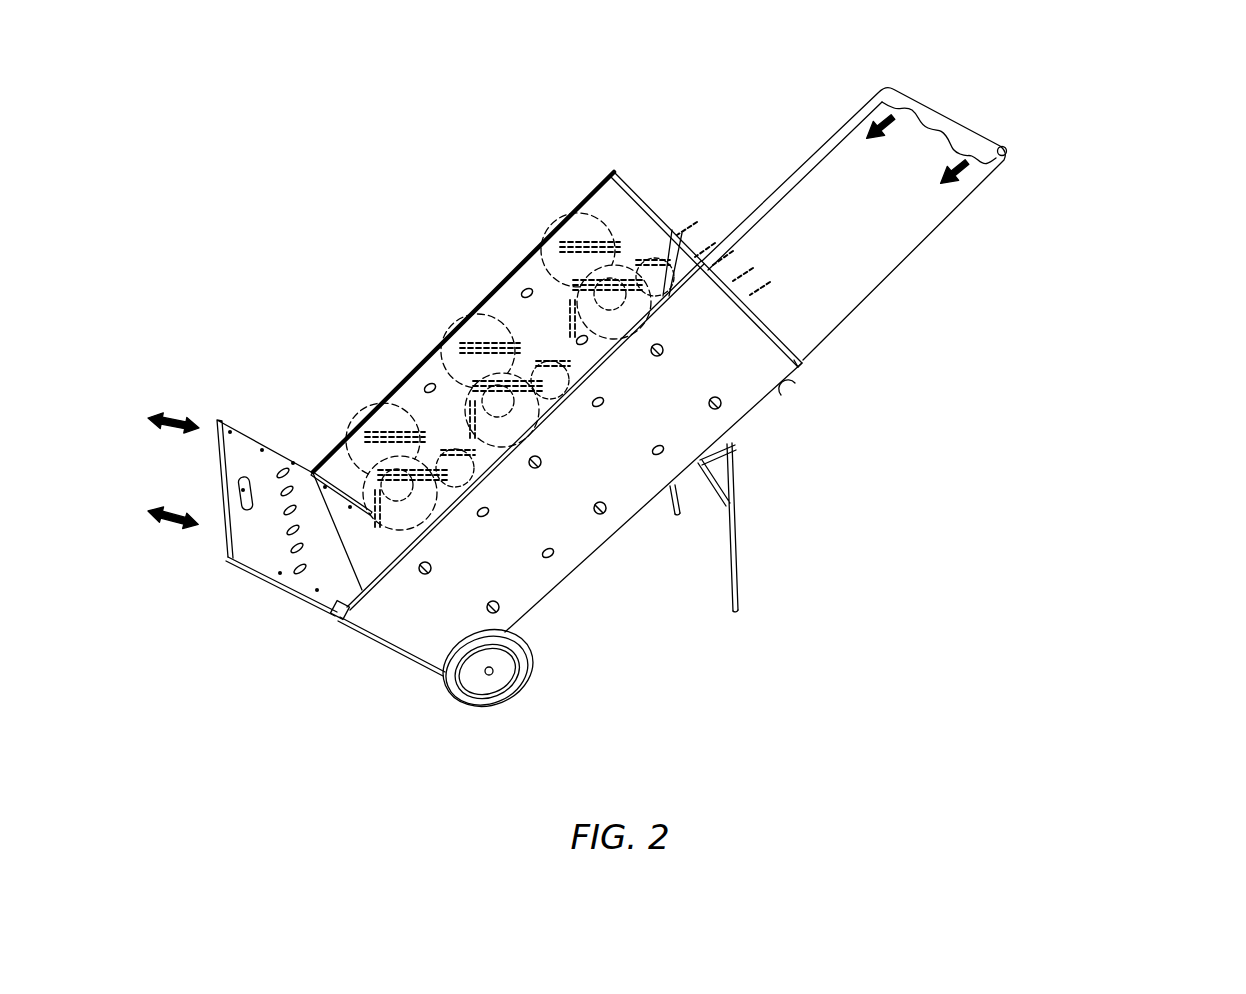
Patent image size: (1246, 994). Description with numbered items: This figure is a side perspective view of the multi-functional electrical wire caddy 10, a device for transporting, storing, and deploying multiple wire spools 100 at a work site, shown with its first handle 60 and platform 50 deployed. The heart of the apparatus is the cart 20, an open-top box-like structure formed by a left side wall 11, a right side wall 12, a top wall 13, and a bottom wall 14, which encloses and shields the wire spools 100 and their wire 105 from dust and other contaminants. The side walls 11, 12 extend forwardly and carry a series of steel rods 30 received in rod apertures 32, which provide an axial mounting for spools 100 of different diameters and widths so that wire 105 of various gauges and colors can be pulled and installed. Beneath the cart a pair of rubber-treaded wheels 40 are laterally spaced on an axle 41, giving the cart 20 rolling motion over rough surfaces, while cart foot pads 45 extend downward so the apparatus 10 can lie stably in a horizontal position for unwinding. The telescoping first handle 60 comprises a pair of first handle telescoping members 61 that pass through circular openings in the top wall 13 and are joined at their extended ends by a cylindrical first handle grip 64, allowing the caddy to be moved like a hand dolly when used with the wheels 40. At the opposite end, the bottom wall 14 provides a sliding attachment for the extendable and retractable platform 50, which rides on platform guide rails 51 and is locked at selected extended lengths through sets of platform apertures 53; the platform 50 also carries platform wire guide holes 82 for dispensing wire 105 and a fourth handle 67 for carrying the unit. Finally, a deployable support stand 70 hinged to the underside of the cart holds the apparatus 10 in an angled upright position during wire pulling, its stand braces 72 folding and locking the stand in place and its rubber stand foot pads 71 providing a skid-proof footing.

The multi-functional electrical wire caddy 10 is at (1150, 138).
The cart 20 is at (646, 172).
The left side wall 11 is at (415, 368).
The right side wall 12 is at (603, 360).
The top wall 13 is at (613, 173).
The bottom wall 14 is at (363, 562).
The rods 30 is at (720, 400).
The rod apertures 32 is at (578, 338).
The wheels 40 is at (472, 688).
The axle 41 is at (490, 675).
The cart foot pads 45 is at (795, 390).
The platform 50 is at (226, 480).
The platform guide rails 51 is at (314, 470).
The platform apertures 53 is at (260, 447).
The first handle 60 is at (814, 139).
The first handle telescoping members 61 is at (938, 220).
The first handle grip 64 is at (962, 128).
The fourth handle 67 is at (247, 477).
The support stand 70 is at (733, 553).
The stand foot pads 71 is at (675, 517).
The stand braces 72 is at (733, 448).
The platform wire guide holes 82 is at (293, 570).
The wire spools 100 is at (399, 517).
The wire 105 is at (765, 286).